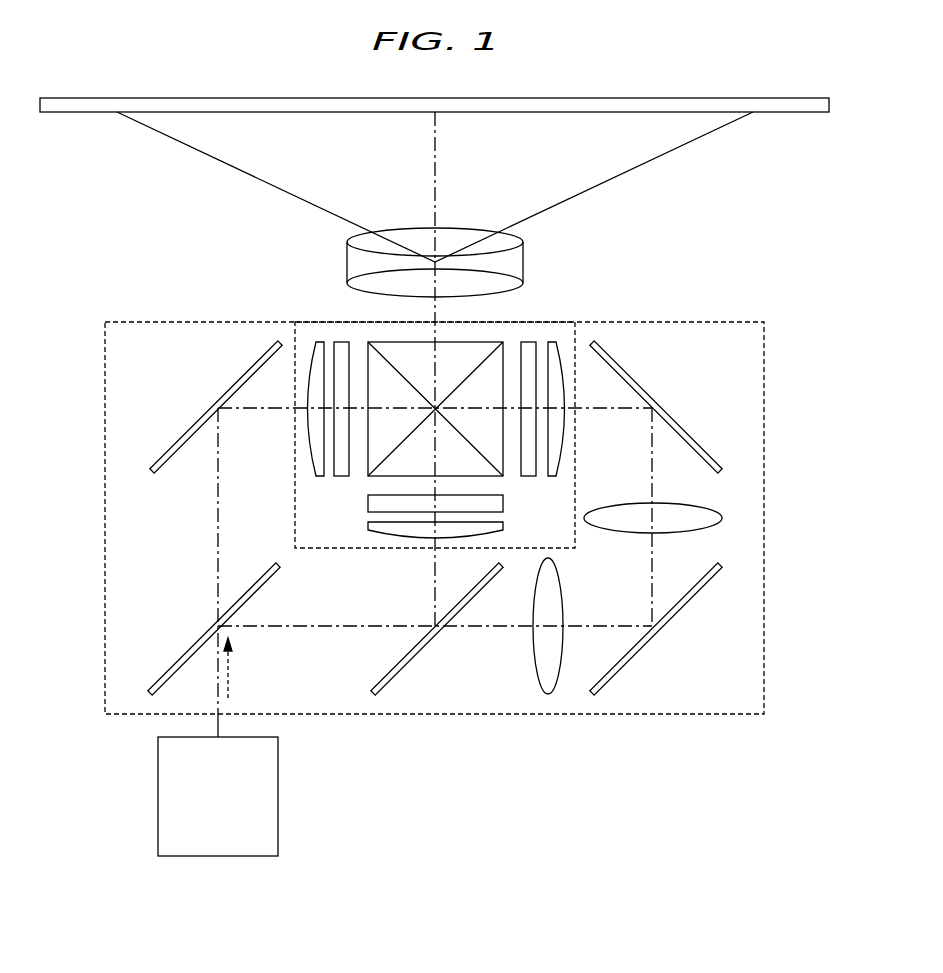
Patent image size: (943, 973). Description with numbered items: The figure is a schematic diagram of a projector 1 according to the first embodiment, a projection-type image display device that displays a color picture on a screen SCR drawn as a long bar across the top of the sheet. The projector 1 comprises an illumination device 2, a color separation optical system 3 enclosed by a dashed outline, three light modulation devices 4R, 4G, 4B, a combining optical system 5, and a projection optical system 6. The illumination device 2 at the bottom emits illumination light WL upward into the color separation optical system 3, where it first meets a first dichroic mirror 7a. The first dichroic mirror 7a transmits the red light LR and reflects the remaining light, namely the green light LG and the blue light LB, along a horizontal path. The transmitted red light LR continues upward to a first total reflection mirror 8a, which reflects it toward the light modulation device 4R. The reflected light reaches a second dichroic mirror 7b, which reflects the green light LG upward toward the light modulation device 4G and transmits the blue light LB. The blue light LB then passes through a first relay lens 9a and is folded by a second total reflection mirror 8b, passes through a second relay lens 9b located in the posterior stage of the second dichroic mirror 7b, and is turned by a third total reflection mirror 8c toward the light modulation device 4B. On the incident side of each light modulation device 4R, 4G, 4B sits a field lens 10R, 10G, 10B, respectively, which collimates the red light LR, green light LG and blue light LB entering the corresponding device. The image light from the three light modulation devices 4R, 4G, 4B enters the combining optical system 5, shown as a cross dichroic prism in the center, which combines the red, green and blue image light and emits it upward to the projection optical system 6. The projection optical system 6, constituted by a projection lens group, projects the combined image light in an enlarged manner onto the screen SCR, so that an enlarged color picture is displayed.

The screen SCR is at (796, 114).
The projector 1 is at (773, 297).
The illumination device 2 is at (278, 794).
The color separation optical system 3 is at (105, 462).
The light modulation device 4R is at (341, 342).
The light modulation device 4G is at (368, 503).
The light modulation device 4B is at (528, 342).
The combining optical system 5 is at (458, 352).
The projection optical system 6 is at (416, 240).
The first dichroic mirror 7a is at (178, 657).
The second dichroic mirror 7b is at (412, 657).
The first total reflection mirror 8a is at (193, 422).
The second total reflection mirror 8b is at (680, 608).
The third total reflection mirror 8c is at (683, 425).
The first relay lens 9a is at (533, 648).
The second relay lens 9b is at (710, 508).
The field lens 10R is at (310, 342).
The field lens 10G is at (368, 527).
The field lens 10B is at (557, 342).
The red light LR is at (218, 540).
The green light LG is at (435, 582).
The blue light LB is at (652, 575).
The illumination light WL is at (228, 676).